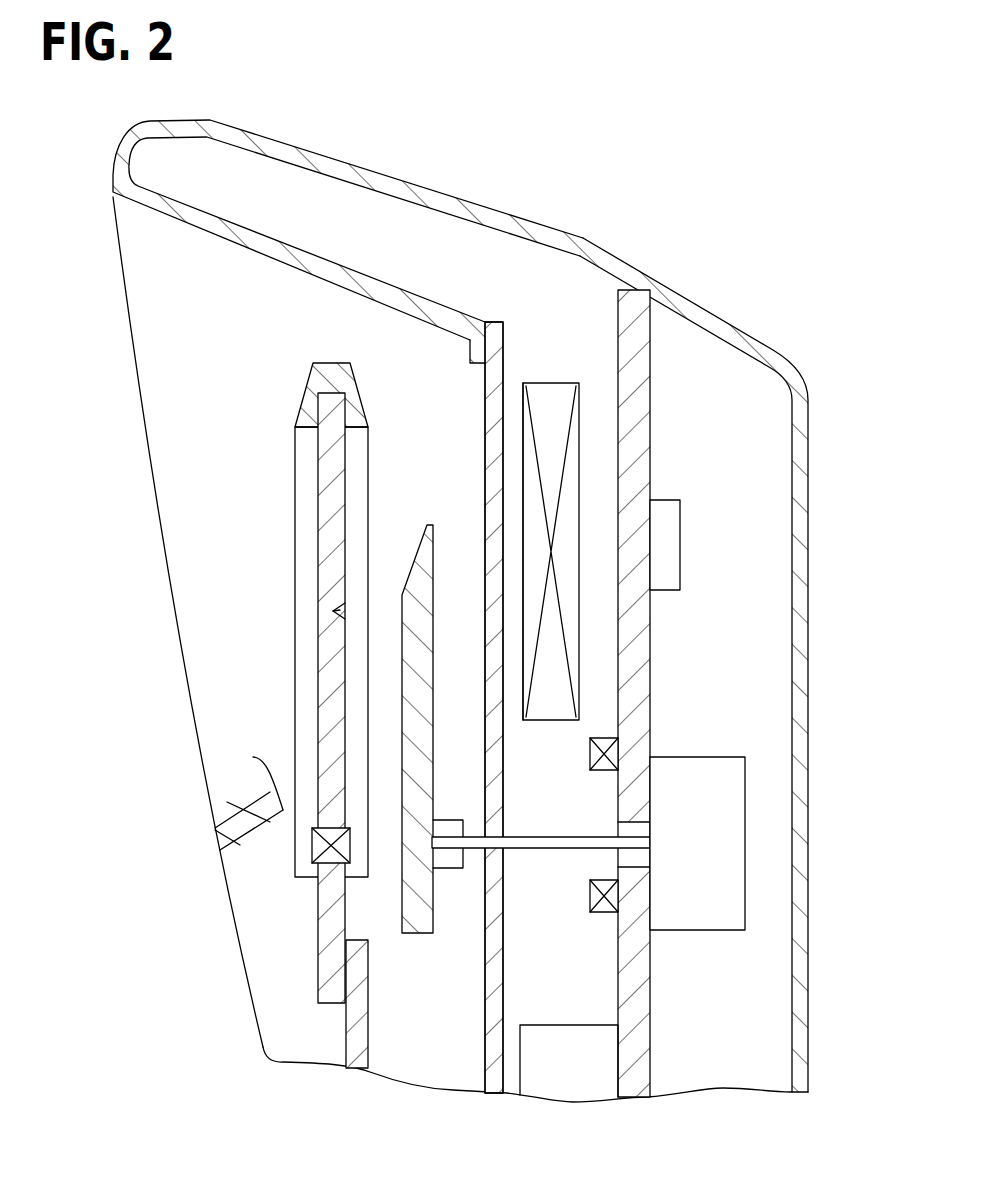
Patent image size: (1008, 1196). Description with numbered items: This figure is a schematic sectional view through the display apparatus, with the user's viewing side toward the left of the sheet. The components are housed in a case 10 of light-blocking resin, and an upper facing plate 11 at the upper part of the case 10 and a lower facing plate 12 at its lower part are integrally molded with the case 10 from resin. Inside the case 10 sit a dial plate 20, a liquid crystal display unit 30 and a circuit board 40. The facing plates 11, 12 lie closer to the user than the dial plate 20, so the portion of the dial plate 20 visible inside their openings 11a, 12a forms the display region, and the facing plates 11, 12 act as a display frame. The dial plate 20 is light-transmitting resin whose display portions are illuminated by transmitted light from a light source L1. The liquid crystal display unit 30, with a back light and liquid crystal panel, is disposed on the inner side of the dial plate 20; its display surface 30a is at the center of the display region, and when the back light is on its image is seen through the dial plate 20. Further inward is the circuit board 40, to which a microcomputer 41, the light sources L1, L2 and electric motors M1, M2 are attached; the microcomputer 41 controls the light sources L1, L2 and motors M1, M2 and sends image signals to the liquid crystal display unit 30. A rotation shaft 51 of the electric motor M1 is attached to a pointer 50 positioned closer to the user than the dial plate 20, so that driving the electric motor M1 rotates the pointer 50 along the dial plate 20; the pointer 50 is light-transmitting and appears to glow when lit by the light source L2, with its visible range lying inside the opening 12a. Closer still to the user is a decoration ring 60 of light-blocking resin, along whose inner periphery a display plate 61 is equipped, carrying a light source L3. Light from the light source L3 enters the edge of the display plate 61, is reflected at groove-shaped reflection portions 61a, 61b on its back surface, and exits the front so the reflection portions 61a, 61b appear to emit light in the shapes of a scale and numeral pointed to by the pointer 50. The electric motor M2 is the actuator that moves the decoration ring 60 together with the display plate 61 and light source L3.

The case 10 is at (730, 325).
The upper facing plate 11 is at (247, 250).
The opening 11a is at (478, 363).
The lower facing plate 12 is at (227, 802).
The opening 12a is at (253, 757).
The dial plate 20 is at (485, 1057).
The liquid crystal display unit 30 is at (553, 383).
The display surface 30a is at (522, 430).
The circuit board 40 is at (650, 367).
The microcomputer 41 is at (680, 547).
The pointer 50 is at (433, 553).
The rotation shaft 51 is at (540, 849).
The decoration ring 60 is at (313, 365).
The display plate 61 is at (332, 577).
The reflection portion 61a is at (340, 610).
The reflection portion 61b is at (336, 610).
The light source L1 is at (600, 738).
The light source L2 is at (600, 912).
The light source L3 is at (312, 852).
The electric motor M1 is at (745, 843).
The electric motor M2 is at (567, 1063).